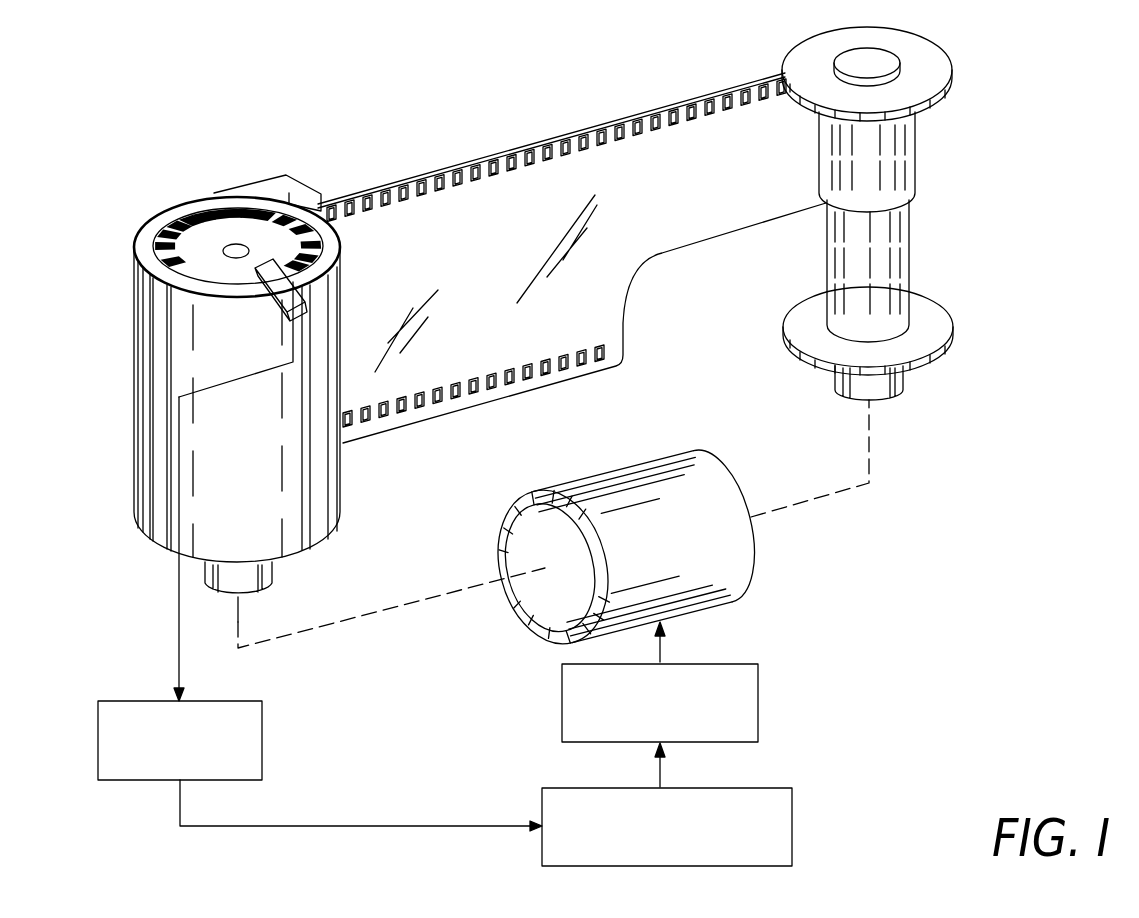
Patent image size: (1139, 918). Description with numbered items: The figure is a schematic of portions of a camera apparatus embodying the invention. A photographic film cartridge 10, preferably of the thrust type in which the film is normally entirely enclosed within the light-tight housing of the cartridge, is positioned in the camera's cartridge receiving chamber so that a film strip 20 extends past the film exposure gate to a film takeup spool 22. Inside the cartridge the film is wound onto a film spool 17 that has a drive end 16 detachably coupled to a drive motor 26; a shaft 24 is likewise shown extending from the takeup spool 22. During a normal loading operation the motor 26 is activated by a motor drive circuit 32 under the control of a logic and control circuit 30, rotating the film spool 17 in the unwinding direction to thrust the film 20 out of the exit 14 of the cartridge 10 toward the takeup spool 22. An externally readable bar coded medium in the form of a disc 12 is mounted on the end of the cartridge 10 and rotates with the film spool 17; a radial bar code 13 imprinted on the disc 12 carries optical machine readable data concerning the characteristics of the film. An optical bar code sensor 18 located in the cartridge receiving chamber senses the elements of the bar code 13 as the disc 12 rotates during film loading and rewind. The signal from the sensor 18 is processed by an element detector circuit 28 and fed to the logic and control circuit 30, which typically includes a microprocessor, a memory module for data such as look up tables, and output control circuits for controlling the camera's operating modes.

The photographic film cartridge 10 is at (160, 535).
The disc 12 is at (203, 258).
The radial bar code 13 is at (248, 213).
The exit 14 is at (293, 190).
The drive end 16 is at (240, 580).
The film spool 17 is at (233, 248).
The optical bar code sensor 18 is at (278, 285).
The film strip 20 is at (472, 160).
The film takeup spool 22 is at (863, 250).
The take-up spool shaft 24 is at (857, 390).
The drive motor 26 is at (748, 545).
The element detector circuit 28 is at (243, 701).
The logic and control circuit 30 is at (780, 788).
The motor drive circuit 32 is at (757, 665).